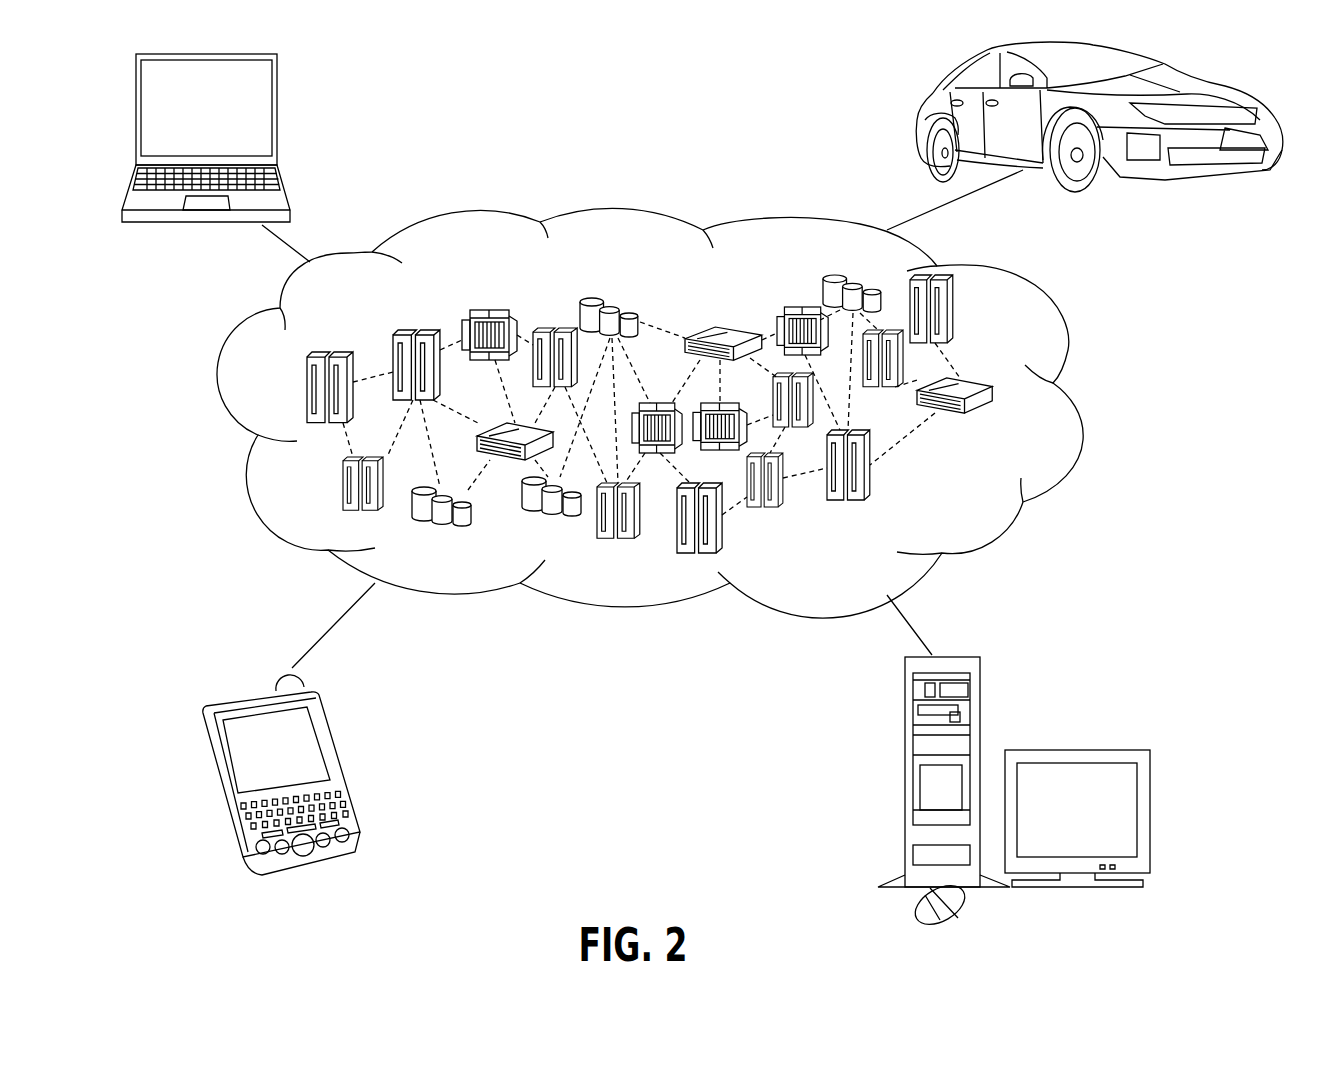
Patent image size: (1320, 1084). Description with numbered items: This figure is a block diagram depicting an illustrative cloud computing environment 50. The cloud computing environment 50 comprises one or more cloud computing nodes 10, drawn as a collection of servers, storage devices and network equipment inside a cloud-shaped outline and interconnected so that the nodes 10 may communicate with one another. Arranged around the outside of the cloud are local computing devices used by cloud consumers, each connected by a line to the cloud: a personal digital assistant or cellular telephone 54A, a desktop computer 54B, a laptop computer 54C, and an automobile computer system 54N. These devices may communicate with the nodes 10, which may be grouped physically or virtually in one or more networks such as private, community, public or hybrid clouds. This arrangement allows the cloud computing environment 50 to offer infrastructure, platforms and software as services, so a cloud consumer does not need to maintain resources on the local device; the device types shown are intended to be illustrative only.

The cloud computing node 10 is at (979, 500).
The cloud computing environment 50 is at (1074, 401).
The personal digital assistant or cellular telephone 54A is at (332, 733).
The desktop computer 54B is at (905, 715).
The laptop computer 54C is at (277, 92).
The automobile computer system 54N is at (920, 110).